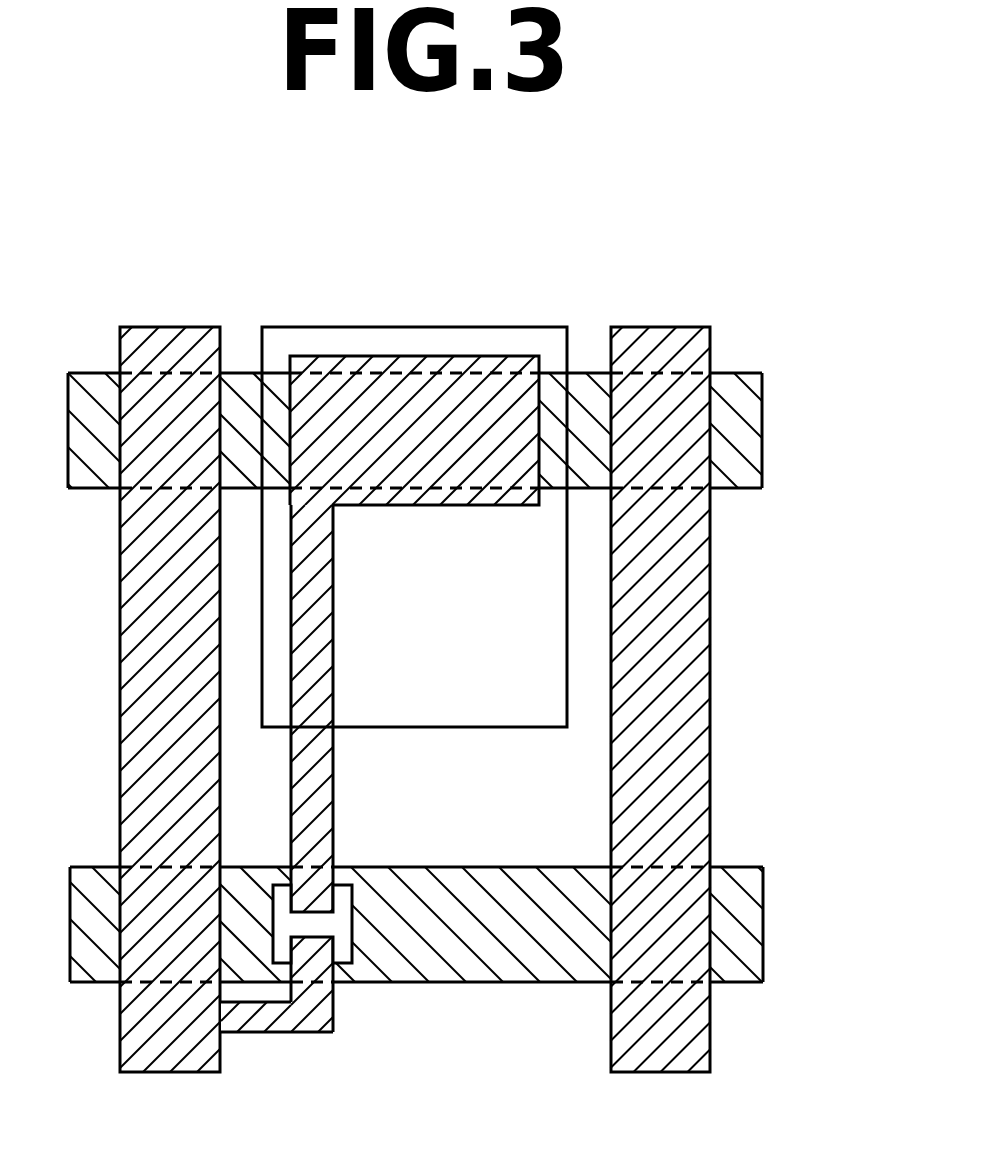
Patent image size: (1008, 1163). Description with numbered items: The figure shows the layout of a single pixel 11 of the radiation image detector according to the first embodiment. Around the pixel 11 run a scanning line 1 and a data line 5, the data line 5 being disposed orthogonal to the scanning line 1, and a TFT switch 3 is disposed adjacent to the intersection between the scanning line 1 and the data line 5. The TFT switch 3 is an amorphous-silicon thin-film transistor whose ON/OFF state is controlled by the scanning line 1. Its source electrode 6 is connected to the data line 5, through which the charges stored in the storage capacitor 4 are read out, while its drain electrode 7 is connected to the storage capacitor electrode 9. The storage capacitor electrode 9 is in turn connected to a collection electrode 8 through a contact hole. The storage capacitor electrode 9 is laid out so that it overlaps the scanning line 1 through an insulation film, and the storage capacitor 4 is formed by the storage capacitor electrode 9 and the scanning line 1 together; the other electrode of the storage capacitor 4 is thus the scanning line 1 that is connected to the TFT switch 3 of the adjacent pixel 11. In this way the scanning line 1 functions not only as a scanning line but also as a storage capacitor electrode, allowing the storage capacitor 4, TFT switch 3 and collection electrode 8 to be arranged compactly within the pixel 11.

The scanning line 1 is at (415, 727).
The TFT switch 3 is at (376, 975).
The storage capacitor 4 is at (372, 525).
The data line 5 is at (190, 340).
The source electrode 6 is at (312, 1025).
The drain electrode 7 is at (323, 788).
The collection electrode 8 is at (407, 327).
The storage capacitor electrode 9 is at (472, 508).
The pixel 11 is at (593, 247).